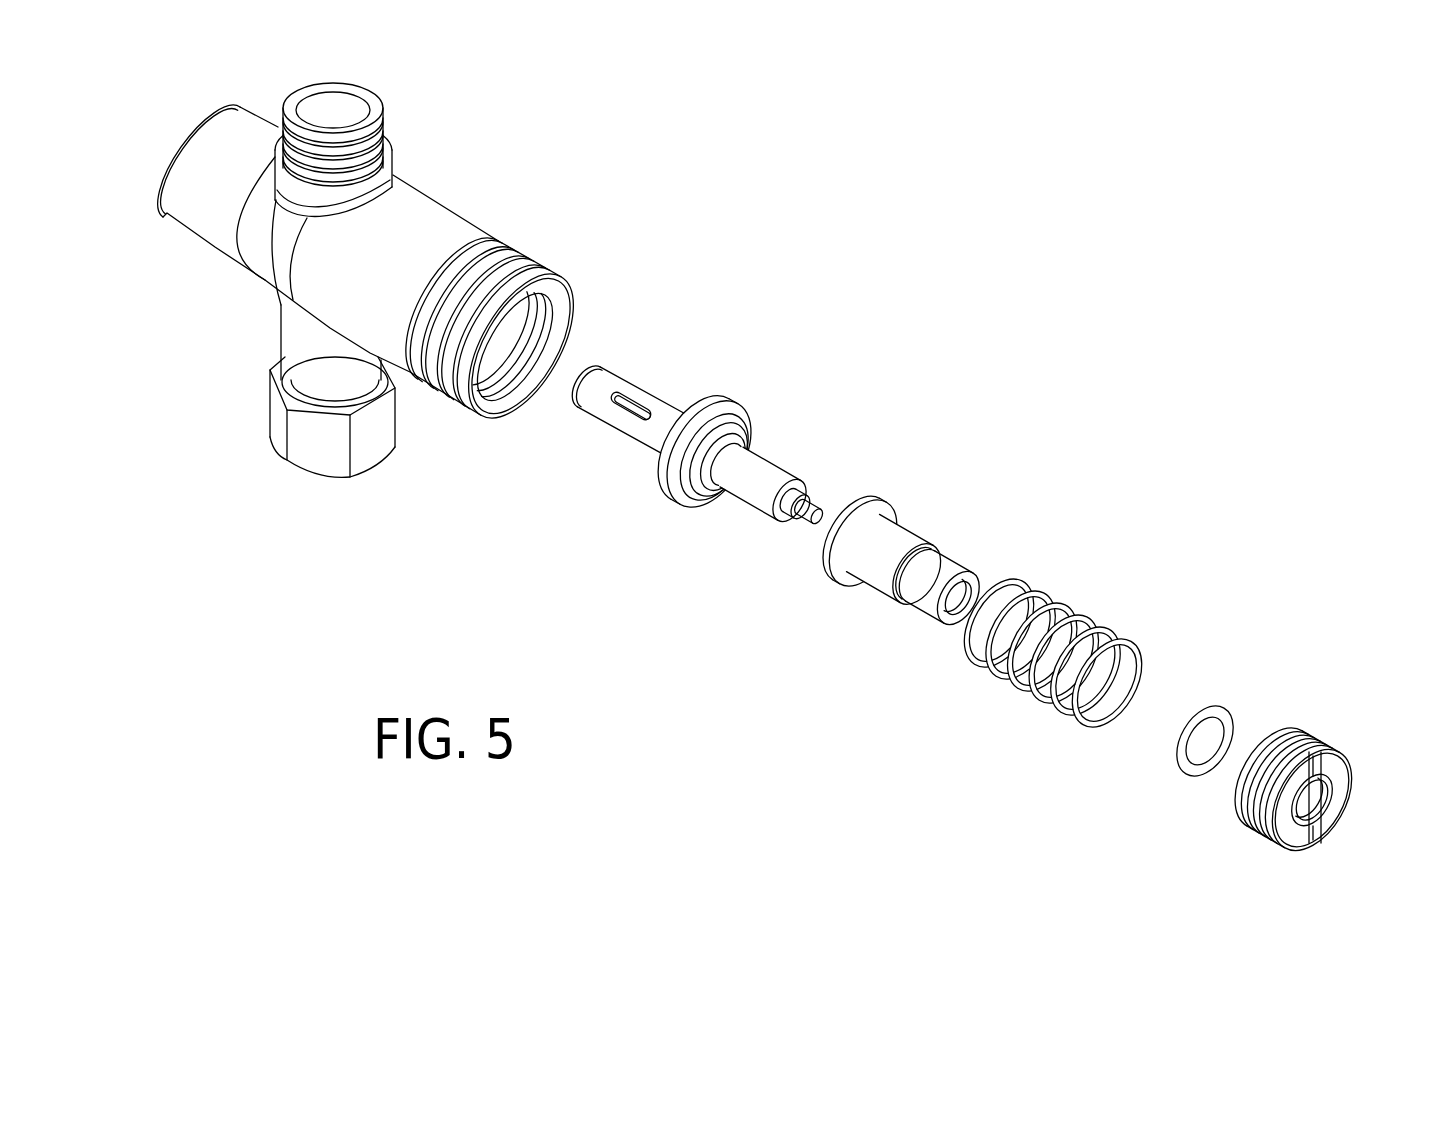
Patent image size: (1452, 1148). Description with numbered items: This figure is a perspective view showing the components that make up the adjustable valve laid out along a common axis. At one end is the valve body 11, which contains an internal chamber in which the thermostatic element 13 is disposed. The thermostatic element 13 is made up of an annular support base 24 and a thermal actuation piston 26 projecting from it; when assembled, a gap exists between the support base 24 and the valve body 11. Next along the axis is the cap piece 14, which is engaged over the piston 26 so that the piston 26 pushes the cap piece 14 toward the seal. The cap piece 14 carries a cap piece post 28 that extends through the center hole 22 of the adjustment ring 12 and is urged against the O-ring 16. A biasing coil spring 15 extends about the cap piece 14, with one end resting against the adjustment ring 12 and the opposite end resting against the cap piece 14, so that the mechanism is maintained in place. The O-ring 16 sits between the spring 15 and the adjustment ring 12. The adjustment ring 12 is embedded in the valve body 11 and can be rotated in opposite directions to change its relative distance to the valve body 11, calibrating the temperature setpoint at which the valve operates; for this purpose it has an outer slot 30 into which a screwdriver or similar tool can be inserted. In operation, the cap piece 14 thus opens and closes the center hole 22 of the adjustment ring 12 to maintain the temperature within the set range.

The valve body 11 is at (446, 206).
The adjustment ring 12 is at (1323, 790).
The thermostatic element 13 is at (698, 469).
The cap piece 14 is at (908, 574).
The coil spring 15 is at (1083, 600).
The O-ring 16 is at (1177, 760).
The center hole 22 is at (1323, 797).
The annular support base 24 is at (664, 464).
The thermal actuation piston 26 is at (805, 522).
The cap piece post 28 is at (929, 598).
The outer slot 30 is at (1310, 840).